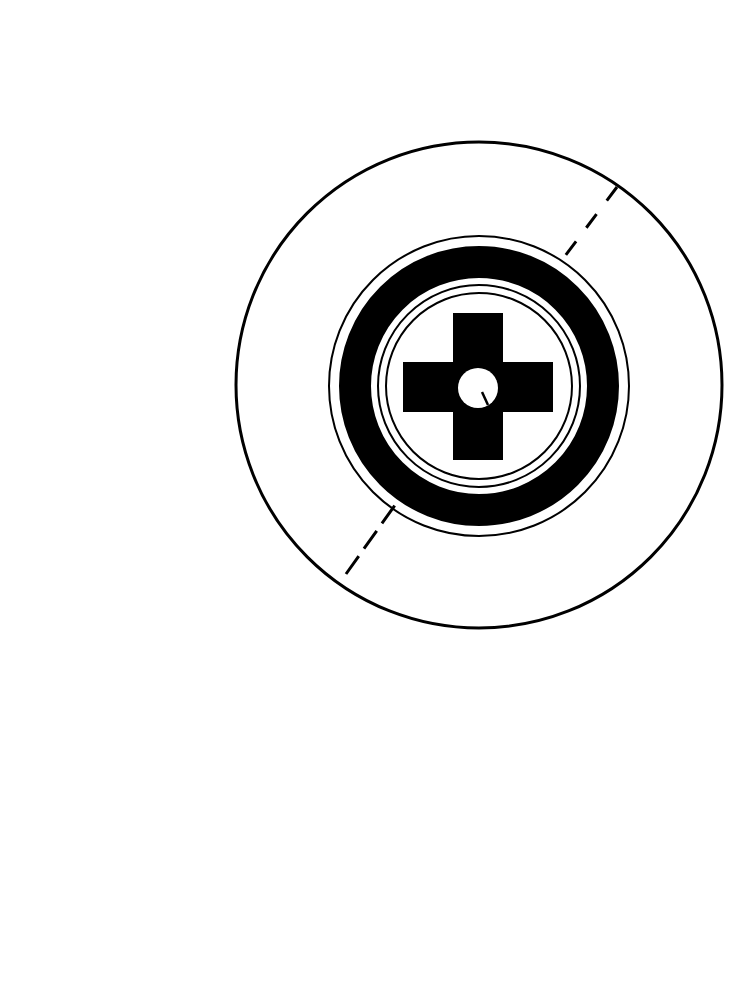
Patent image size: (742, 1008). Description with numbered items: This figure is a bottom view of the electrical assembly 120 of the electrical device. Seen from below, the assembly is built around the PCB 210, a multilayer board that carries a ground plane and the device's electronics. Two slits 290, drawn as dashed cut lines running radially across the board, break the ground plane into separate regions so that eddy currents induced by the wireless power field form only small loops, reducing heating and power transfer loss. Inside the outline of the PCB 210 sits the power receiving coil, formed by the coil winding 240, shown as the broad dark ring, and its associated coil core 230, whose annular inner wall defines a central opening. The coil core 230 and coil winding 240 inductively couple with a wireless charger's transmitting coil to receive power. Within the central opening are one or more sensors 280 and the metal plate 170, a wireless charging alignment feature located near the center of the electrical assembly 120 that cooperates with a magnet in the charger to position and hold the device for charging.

The electrical assembly 120 is at (360, 152).
The PCB 210 is at (250, 427).
The slits 290 is at (243, 710).
The coil winding 240 is at (373, 295).
The coil core 230 is at (340, 348).
The metal plate 170 is at (503, 412).
The sensors 280 is at (428, 412).